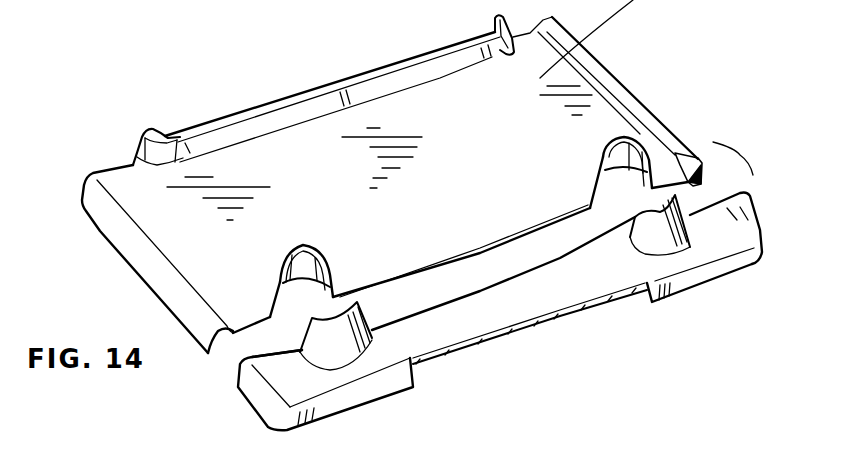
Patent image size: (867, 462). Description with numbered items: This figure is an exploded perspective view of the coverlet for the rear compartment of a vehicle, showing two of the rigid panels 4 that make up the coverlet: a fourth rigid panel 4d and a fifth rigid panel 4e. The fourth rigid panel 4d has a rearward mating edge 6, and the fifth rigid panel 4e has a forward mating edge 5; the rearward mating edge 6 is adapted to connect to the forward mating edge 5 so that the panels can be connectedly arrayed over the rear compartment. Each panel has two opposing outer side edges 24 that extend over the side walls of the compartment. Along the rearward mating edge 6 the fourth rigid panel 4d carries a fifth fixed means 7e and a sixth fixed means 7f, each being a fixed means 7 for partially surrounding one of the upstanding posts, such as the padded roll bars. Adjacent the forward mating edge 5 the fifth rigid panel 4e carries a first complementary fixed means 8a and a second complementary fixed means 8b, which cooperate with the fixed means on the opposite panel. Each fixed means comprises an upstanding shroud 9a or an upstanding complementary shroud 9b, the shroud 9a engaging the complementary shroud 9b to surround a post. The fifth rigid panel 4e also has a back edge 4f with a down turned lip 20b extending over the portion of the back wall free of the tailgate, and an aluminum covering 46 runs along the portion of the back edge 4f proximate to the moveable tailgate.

The rigid panel 4 is at (725, 229).
The fourth rigid panel 4d is at (639, 93).
The fifth rigid panel 4e is at (748, 195).
The back edge 4f is at (393, 391).
The forward mating edge 5 is at (485, 287).
The rearward mating edge 6 is at (530, 235).
The fixed means for partially surrounding an upstanding post 7 is at (320, 250).
The fifth fixed means 7e is at (300, 243).
The sixth fixed means 7f is at (600, 147).
The first complementary fixed means 8a is at (303, 337).
The second complementary fixed means 8b is at (690, 210).
The upstanding shroud 9a is at (275, 262).
The upstanding complementary shroud 9b is at (350, 308).
The down turned lip 20b is at (333, 408).
The outer side edge 24 is at (610, 68).
The aluminum covering 46 is at (557, 316).